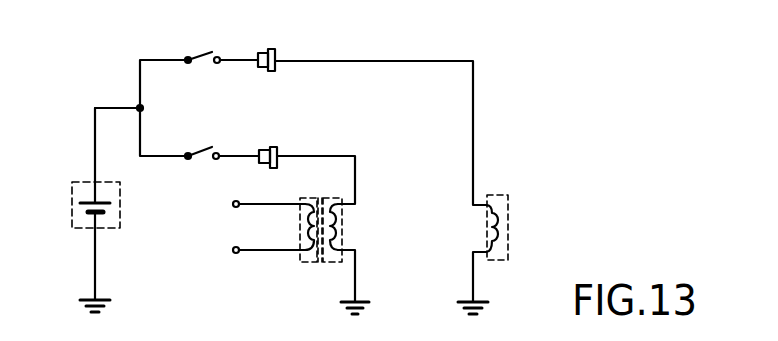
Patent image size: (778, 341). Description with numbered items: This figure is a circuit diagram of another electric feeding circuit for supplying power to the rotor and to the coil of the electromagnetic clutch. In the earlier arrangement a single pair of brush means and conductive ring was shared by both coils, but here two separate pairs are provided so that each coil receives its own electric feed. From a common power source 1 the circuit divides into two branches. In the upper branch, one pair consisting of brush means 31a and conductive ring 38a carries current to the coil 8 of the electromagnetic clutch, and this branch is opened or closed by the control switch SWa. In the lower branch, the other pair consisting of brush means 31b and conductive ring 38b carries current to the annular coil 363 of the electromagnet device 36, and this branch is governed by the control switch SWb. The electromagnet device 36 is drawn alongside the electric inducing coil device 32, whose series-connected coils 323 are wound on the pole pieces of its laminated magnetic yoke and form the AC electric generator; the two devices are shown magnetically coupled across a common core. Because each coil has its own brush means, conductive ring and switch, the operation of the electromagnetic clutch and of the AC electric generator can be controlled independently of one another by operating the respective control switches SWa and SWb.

The battery 1 is at (84, 228).
The control switch SWa is at (230, 42).
The control switch SWb is at (202, 162).
The brush means 31a is at (268, 50).
The conductive ring 38a is at (277, 53).
The brush means 31b is at (266, 149).
The conductive ring 38b is at (278, 150).
The electric inducing coil device 32 is at (283, 251).
The coils 323 is at (303, 223).
The electromagnet device 36 is at (350, 254).
The annular coil 363 is at (340, 231).
The coil of the electromagnetic clutch 8 is at (505, 234).